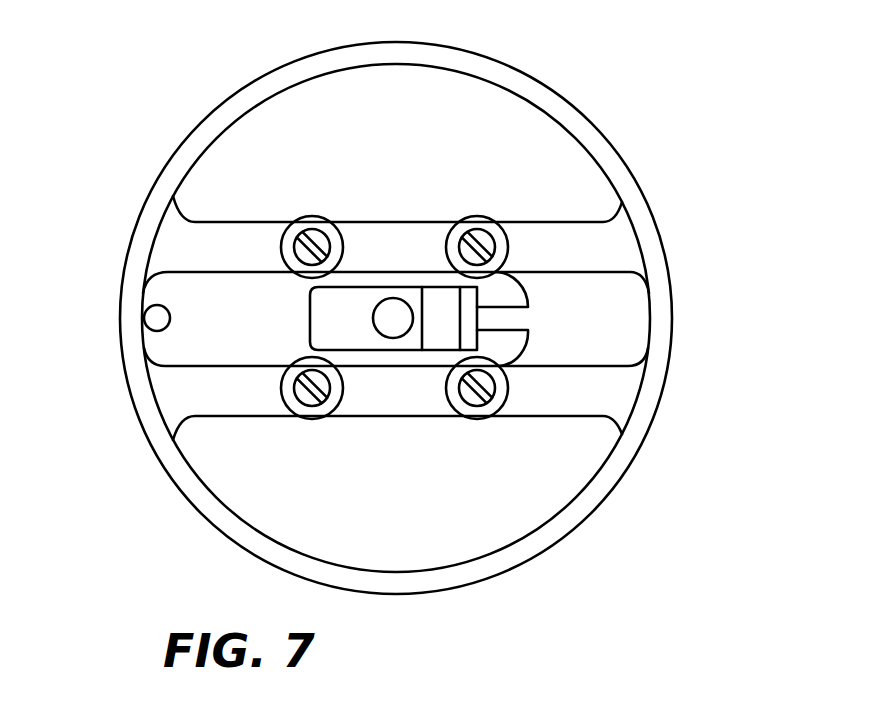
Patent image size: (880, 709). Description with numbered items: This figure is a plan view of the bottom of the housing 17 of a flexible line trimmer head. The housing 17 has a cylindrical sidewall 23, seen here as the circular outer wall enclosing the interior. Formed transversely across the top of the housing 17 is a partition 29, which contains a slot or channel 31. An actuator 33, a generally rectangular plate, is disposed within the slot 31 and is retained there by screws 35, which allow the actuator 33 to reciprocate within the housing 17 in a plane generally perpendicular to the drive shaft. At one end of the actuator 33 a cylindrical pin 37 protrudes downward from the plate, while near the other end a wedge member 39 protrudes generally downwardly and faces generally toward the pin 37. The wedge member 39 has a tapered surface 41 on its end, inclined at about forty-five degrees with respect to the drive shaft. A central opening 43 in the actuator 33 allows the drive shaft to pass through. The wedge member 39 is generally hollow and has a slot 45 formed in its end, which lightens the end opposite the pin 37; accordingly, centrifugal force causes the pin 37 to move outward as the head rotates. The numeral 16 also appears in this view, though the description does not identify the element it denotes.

The housing 17 is at (568, 102).
The cylindrical sidewall 23 is at (617, 152).
The slot or channel 31 is at (634, 352).
The screws 35 is at (481, 217).
The partition 29 is at (528, 419).
The cylindrical pin 37 is at (153, 315).
The actuator 33 is at (419, 352).
The tapered surface 41 is at (440, 303).
The central hole 16 is at (383, 305).
The central opening 43 is at (313, 328).
The slot 45 is at (535, 291).
The wedge member 39 is at (529, 348).